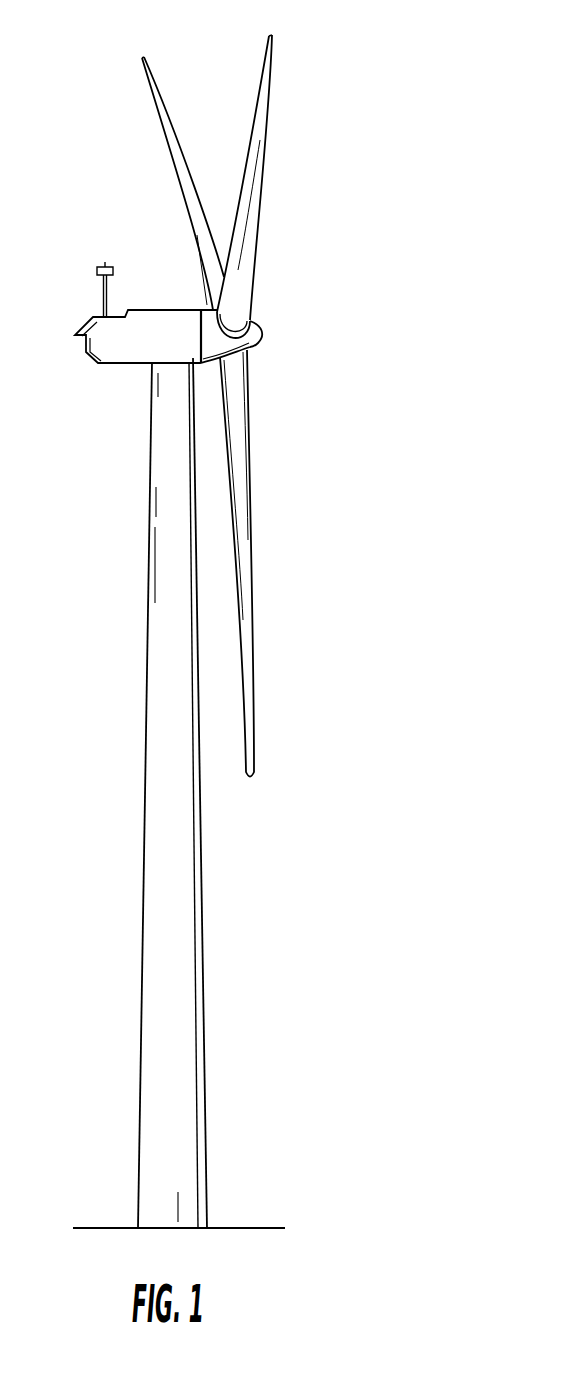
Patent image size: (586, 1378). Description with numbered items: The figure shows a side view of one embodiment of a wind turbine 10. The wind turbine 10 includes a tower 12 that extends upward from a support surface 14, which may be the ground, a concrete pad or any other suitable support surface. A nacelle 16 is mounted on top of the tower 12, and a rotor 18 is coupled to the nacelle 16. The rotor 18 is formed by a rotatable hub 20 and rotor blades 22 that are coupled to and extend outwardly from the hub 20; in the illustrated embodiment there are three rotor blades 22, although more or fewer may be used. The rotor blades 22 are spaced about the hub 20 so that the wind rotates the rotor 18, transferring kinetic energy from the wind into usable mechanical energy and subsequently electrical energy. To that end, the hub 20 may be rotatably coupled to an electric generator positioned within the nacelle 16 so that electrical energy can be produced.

The wind turbine 10 is at (393, 171).
The tower 12 is at (183, 867).
The support surface 14 is at (110, 1228).
The nacelle 16 is at (127, 340).
The rotor 18 is at (294, 304).
The rotatable hub 20 is at (263, 331).
The rotor blade 22 is at (163, 135).